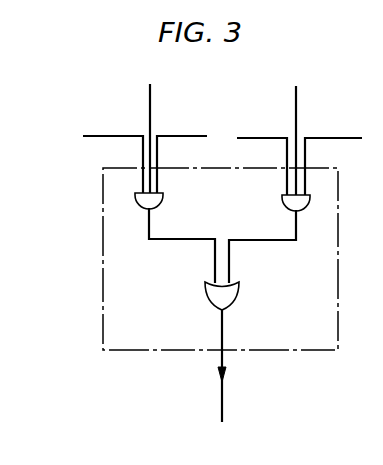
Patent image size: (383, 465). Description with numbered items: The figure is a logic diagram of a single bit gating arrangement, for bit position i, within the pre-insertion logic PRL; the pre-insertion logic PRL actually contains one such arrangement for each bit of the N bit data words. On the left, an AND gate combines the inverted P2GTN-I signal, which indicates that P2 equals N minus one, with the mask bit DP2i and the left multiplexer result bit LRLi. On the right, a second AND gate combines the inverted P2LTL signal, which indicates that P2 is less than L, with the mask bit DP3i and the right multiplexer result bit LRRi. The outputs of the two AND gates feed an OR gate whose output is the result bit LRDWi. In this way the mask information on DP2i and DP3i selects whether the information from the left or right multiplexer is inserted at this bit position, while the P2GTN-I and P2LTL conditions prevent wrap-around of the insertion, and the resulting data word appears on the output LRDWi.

The pre-insertion logic PRL is at (103, 263).
The DP2 mask bit i DP2i is at (148, 126).
The DP3 mask bit i DP3i is at (296, 128).
The P2GTN-1 conductor signal P2GTN-I is at (139, 106).
The LRL cable bit i LRLi is at (182, 150).
The P2LTL conductor signal P2LTL is at (292, 108).
The LRR cable bit i LRRi is at (333, 152).
The LRDW output bit i LRDWi is at (222, 379).